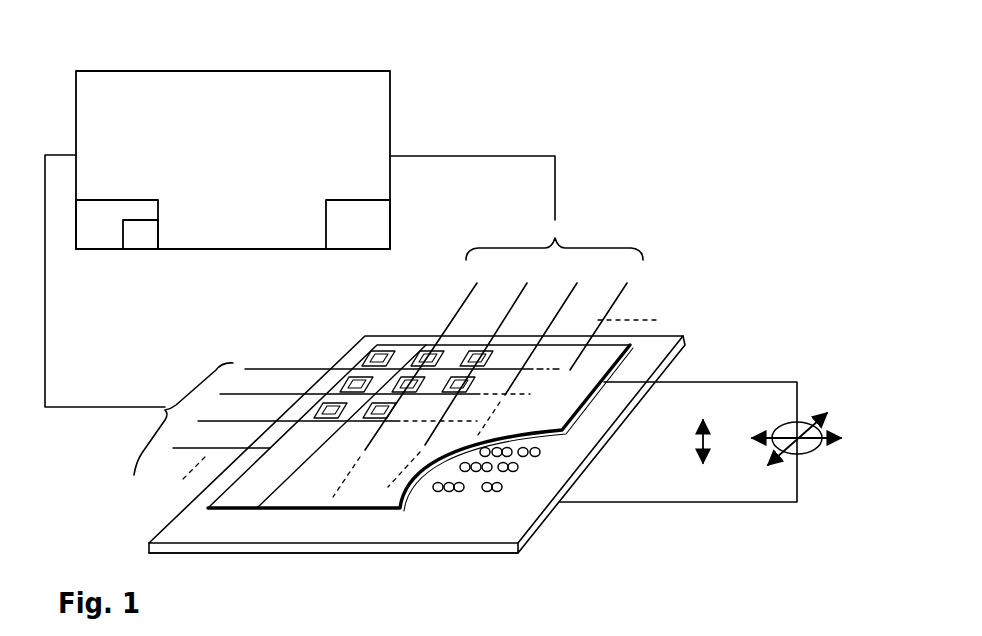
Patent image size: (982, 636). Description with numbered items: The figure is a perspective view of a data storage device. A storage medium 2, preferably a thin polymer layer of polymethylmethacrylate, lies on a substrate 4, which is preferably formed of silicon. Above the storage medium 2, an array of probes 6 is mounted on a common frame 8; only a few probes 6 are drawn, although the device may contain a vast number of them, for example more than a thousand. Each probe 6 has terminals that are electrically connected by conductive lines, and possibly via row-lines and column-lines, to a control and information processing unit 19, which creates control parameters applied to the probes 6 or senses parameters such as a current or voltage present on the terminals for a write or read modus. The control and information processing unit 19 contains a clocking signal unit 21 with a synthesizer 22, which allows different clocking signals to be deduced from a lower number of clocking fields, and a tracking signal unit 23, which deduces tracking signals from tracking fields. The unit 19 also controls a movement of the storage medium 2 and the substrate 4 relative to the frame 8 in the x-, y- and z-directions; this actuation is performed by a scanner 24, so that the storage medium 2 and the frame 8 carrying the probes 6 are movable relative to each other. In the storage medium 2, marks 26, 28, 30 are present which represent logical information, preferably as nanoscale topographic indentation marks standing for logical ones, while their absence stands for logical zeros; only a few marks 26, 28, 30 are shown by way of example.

The storage medium 2 is at (177, 526).
The substrate 4 is at (237, 556).
The probes 6 is at (418, 357).
The frame 8 is at (237, 497).
The control and information processing unit 19 is at (136, 70).
The clocking signal unit 21 is at (107, 204).
The synthesizer 22 is at (140, 242).
The tracking signal unit 23 is at (341, 204).
The scanner 24 is at (819, 390).
The mark 26 is at (449, 491).
The mark 28 is at (460, 491).
The mark 30 is at (498, 491).